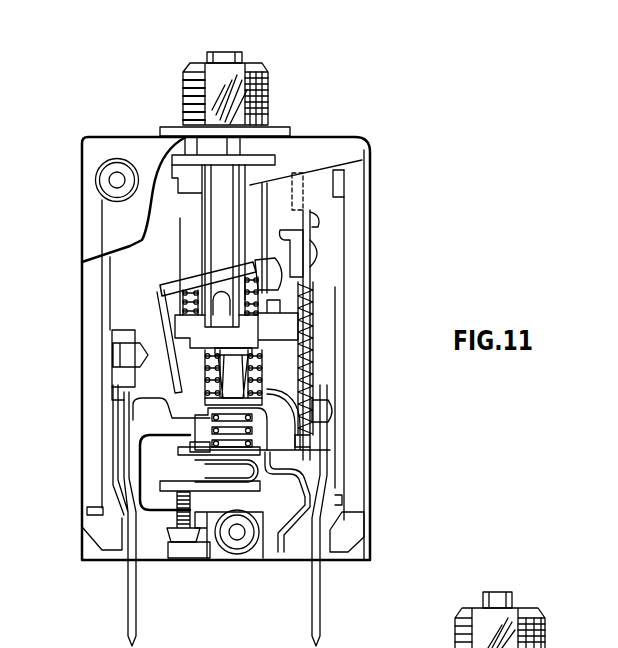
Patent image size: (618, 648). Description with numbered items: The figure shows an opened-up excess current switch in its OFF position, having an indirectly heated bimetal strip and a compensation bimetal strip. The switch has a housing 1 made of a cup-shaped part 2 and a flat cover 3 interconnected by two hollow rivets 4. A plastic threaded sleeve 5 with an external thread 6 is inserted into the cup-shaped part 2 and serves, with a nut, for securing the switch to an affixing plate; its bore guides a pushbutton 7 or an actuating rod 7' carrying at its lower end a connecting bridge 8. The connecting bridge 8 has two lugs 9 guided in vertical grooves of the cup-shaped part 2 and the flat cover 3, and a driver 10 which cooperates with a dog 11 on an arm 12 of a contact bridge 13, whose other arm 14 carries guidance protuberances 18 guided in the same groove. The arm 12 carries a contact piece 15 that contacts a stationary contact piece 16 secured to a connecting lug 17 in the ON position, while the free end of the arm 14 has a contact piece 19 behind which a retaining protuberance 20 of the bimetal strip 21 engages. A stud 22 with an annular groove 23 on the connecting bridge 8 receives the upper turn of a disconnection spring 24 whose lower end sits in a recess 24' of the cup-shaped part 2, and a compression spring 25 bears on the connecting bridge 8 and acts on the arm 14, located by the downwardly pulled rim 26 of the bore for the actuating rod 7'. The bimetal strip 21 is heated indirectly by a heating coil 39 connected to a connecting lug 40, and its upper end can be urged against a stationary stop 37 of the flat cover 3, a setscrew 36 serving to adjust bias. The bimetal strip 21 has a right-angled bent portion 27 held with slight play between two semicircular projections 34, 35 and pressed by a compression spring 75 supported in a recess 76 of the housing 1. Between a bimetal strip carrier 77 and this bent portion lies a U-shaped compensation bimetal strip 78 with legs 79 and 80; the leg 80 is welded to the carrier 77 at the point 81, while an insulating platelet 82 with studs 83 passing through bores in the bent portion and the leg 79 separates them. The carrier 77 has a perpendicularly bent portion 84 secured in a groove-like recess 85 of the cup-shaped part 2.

The housing 1 is at (316, 129).
The cup-shaped part 2 is at (340, 147).
The flat cover 3 is at (127, 145).
The hollow rivets 4 is at (107, 174).
The threaded sleeve 5 is at (272, 100).
The external thread 6 is at (181, 118).
The pushbutton 7 is at (235, 44).
The actuating rod 7' is at (137, 208).
The connecting bridge 8 is at (300, 336).
The lugs 9 is at (183, 330).
The driver 10 is at (180, 313).
The dog 11 is at (115, 342).
The arm 12 is at (133, 392).
The contact bridge 13 is at (155, 290).
The arm 14 is at (292, 222).
The contact piece 15 is at (130, 393).
The stationary contact piece 16 is at (112, 365).
The connecting lug 17 is at (127, 611).
The guidance protuberance 18 is at (210, 266).
The contact piece 19 is at (312, 290).
The retaining protuberance 20 is at (320, 255).
The bimetal strip 21 is at (322, 270).
The stud 22 is at (340, 384).
The annular groove 23 is at (330, 360).
The disconnection spring 24 is at (298, 405).
The recess 24' is at (369, 411).
The compression spring 25 is at (340, 319).
The rim 26 is at (233, 275).
The right-angled bent portion 27 is at (257, 434).
The semicircular projection 34 is at (340, 453).
The semicircular projection 35 is at (340, 467).
The setscrew 36 is at (170, 533).
The stationary stop 37 is at (340, 173).
The heating coil 39 is at (318, 306).
The connecting lug 40 is at (322, 615).
The compression spring 75 is at (247, 443).
The recess 76 is at (340, 428).
The bimetal strip carrier 77 is at (215, 495).
The compensation bimetal strip 78 is at (298, 512).
The leg 79 is at (258, 542).
The leg 80 is at (150, 533).
The welding point 81 is at (200, 481).
The insulating platelet 82 is at (247, 470).
The studs 83 is at (258, 455).
The perpendicularly bent portion 84 is at (362, 513).
The groove-like recess 85 is at (340, 489).